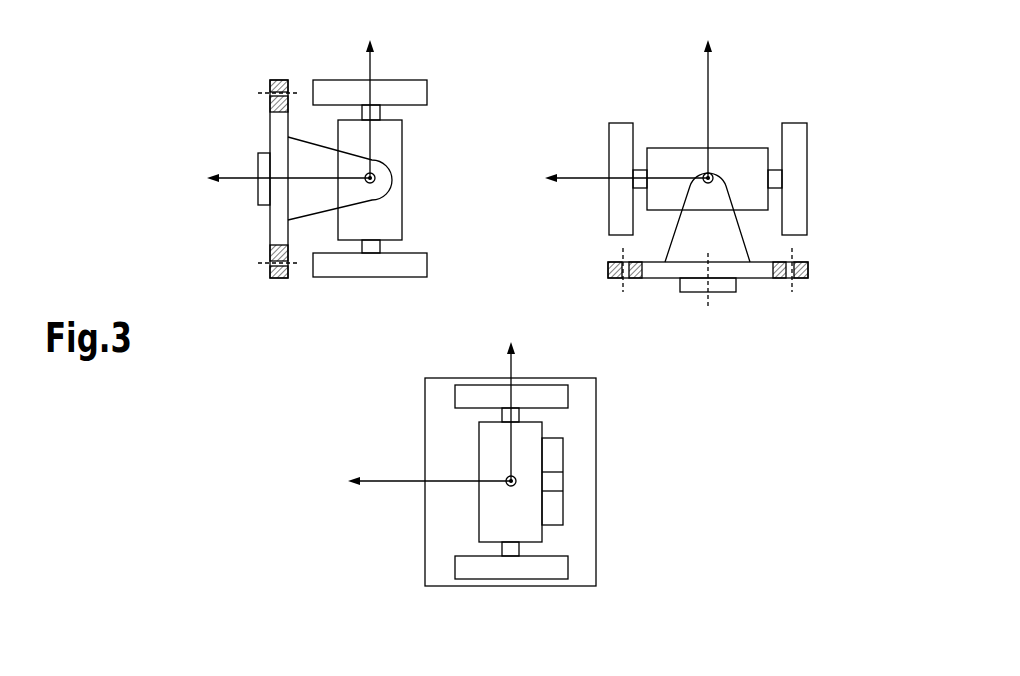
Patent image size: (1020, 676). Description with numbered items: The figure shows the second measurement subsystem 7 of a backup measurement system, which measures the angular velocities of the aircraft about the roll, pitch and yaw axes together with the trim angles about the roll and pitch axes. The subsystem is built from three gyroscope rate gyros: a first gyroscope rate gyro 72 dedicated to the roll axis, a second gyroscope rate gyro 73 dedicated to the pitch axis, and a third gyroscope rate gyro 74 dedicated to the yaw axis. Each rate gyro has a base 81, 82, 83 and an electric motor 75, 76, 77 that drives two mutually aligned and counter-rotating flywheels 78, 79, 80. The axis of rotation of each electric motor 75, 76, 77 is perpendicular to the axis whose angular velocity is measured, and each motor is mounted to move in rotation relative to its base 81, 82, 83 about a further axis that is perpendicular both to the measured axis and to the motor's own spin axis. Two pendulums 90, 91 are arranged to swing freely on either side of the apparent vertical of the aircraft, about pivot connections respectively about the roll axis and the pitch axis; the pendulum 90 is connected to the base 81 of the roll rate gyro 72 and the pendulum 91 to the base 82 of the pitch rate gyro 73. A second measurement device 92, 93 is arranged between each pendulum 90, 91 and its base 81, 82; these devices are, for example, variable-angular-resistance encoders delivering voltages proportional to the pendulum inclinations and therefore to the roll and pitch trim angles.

The second measurement subsystem 7 is at (258, 440).
The first gyroscope rate gyro 72 is at (358, 296).
The second gyroscope rate gyro 73 is at (838, 178).
The third gyroscope rate gyro 74 is at (658, 493).
The electric motor 75 is at (393, 138).
The electric motor 76 is at (753, 158).
The electric motor 77 is at (490, 447).
The flywheels 78 is at (427, 94).
The flywheels 79 is at (623, 123).
The flywheels 80 is at (477, 393).
The base 81 is at (278, 120).
The base 82 is at (663, 272).
The base 83 is at (582, 425).
The pendulum 90 is at (263, 193).
The pendulum 91 is at (693, 284).
The second measurement device 92 is at (276, 190).
The second measurement device 93 is at (706, 279).